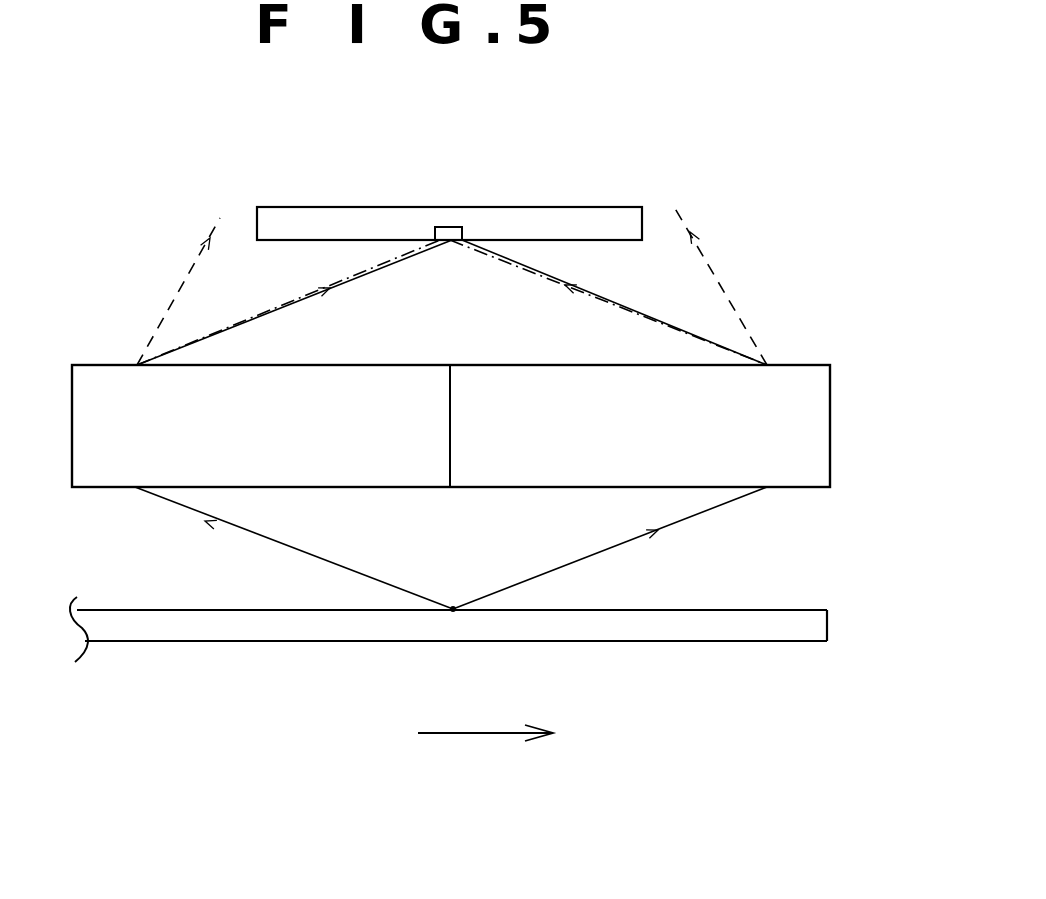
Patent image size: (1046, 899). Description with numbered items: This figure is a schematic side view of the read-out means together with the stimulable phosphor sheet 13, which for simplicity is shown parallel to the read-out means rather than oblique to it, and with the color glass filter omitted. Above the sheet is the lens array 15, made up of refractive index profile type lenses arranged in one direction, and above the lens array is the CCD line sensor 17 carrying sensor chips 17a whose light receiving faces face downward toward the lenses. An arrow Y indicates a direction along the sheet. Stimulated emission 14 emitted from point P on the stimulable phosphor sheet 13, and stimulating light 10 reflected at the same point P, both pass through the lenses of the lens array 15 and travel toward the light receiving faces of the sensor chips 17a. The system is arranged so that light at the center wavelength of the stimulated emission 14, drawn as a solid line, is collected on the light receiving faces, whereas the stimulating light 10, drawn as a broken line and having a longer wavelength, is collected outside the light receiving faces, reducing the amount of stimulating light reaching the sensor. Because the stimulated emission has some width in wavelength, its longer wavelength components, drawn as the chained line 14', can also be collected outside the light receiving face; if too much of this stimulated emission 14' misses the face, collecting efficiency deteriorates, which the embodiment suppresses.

The stimulating light 10 is at (728, 290).
The stimulable phosphor sheet 13 is at (733, 642).
The stimulated emission 14 is at (451, 424).
The stimulated emission collected outside the light receiving face 14' is at (452, 302).
The lens array 15 is at (831, 418).
The CCD line sensor 17 is at (572, 206).
The sensor chips 17a is at (462, 237).
The point on the stimulable phosphor sheet P is at (452, 612).
The direction of arrow Y is at (485, 747).